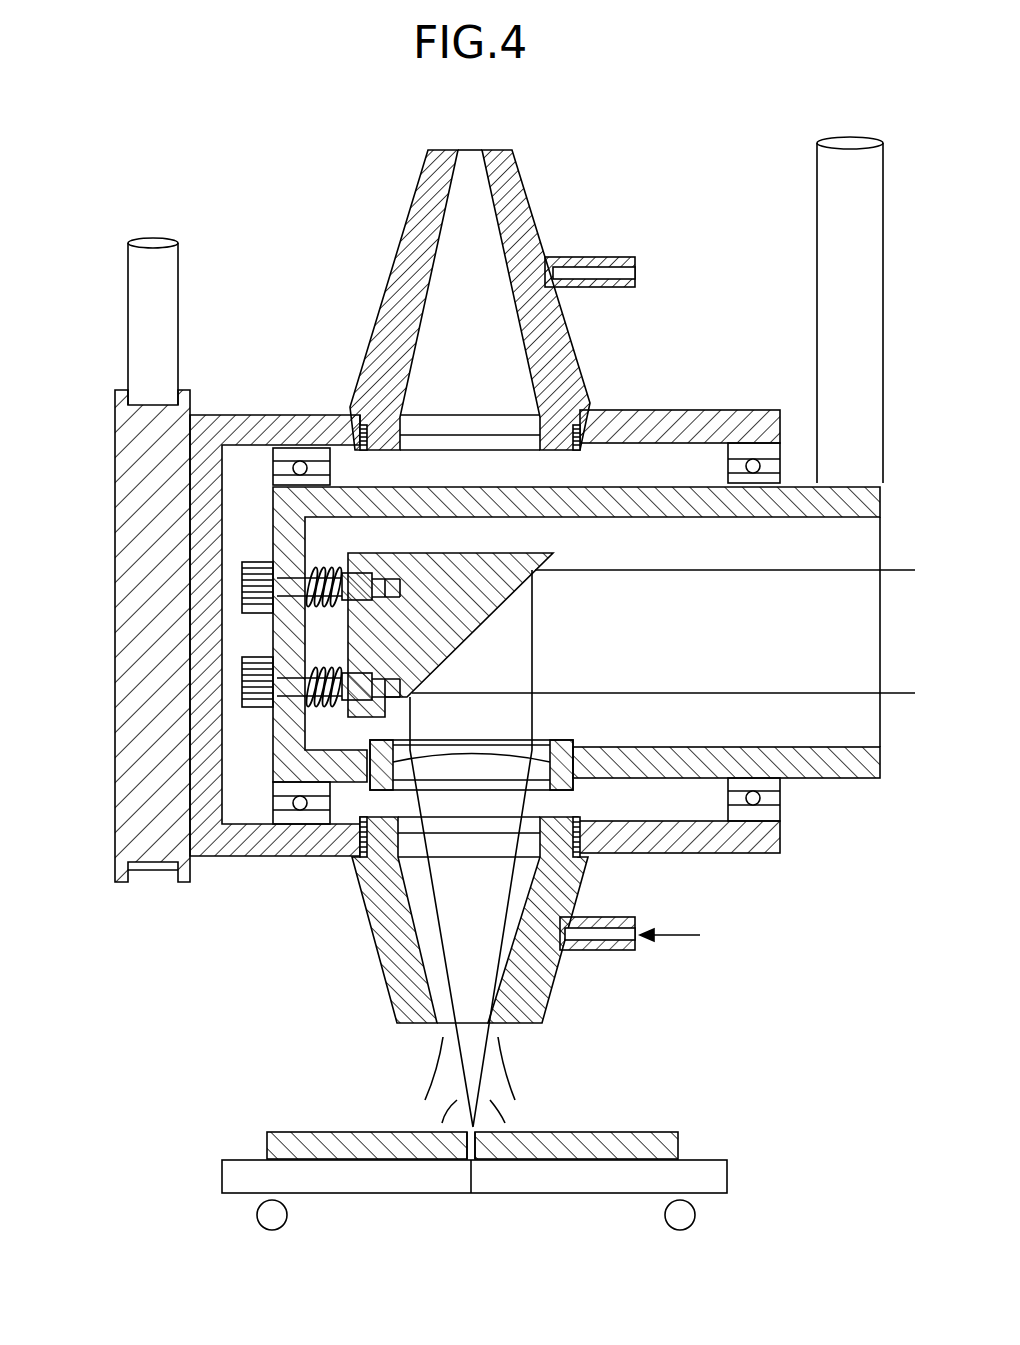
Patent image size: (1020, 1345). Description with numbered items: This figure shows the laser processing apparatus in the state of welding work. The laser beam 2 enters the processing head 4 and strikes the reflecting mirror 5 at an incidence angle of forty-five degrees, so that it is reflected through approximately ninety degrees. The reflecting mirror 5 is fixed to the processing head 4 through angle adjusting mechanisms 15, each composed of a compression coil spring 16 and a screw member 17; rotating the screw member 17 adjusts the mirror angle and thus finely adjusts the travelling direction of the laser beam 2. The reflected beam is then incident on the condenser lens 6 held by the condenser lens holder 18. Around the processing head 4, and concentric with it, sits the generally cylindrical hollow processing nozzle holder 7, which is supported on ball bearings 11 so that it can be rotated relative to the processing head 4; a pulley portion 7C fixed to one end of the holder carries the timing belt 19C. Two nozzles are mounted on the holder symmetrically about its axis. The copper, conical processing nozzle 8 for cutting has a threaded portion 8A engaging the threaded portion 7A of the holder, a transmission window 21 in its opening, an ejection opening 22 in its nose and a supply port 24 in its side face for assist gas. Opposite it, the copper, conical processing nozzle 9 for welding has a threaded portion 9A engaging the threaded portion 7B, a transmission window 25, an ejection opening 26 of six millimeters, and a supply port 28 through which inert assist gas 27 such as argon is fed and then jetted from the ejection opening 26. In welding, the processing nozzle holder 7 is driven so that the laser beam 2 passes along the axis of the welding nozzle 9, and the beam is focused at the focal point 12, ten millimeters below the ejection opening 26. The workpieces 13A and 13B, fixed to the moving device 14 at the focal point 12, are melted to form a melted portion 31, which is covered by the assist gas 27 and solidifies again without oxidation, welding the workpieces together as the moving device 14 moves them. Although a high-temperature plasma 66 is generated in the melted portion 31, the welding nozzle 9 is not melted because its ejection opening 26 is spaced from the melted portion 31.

The laser beam 2 is at (697, 570).
The processing head 4 is at (735, 758).
The reflecting mirror 5 is at (512, 587).
The condenser lens 6 is at (458, 765).
The processing nozzle holder 7 is at (231, 425).
The threaded portion 7A is at (320, 416).
The threaded portion 7B is at (600, 830).
The pulley portion 7C is at (118, 465).
The processing nozzle for cutting 8 is at (397, 268).
The threaded portion 8A is at (373, 423).
The processing nozzle for welding 9 is at (385, 945).
The threaded portion 9A is at (578, 818).
The ball bearings 11 is at (782, 465).
The focal point 12 is at (478, 1126).
The workpiece 13A is at (655, 1140).
The workpiece 13B is at (277, 1140).
The moving device 14 is at (700, 1175).
The angle adjusting mechanism 15 is at (252, 562).
The compression coil spring 16 is at (331, 573).
The screw member 17 is at (365, 556).
The condenser lens holder 18 is at (575, 748).
The timing belt 19C is at (128, 315).
The transmission window 21 is at (480, 423).
The ejection opening 22 is at (468, 148).
The supply port 24 is at (636, 266).
The transmission window 25 is at (405, 845).
The ejection opening 26 is at (450, 1026).
The assist gas 27 is at (505, 1070).
The supply port 28 is at (615, 918).
The melted portion 31 is at (475, 1160).
The high-temperature plasma 66 is at (440, 1115).